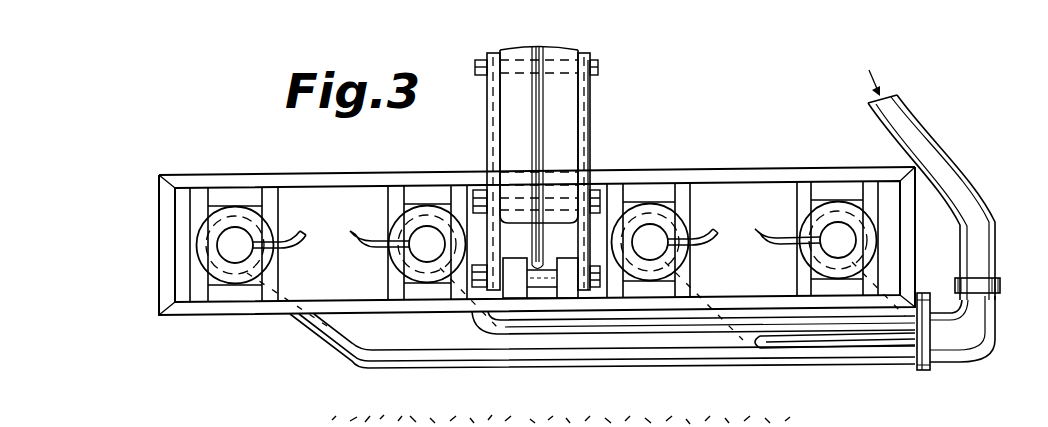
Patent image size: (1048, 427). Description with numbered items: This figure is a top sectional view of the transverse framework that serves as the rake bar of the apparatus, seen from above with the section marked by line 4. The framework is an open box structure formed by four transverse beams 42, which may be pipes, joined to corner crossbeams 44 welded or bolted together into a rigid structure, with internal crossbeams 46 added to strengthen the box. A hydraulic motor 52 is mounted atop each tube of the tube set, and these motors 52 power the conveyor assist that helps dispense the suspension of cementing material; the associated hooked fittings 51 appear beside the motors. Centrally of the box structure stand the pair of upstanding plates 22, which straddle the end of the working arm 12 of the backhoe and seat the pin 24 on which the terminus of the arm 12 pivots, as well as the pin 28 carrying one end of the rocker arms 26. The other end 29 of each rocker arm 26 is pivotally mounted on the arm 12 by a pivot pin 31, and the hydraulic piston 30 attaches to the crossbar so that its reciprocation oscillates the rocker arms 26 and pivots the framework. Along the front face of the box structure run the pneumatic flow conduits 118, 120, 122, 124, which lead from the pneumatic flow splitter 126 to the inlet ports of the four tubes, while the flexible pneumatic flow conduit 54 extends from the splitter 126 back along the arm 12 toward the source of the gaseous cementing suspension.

The section line 4- 4 is at (233, 169).
The working arm 12 is at (567, 118).
The upstanding plates 22 is at (545, 238).
The pin 24 is at (607, 185).
The rocker arms 26 is at (488, 113).
The pin 28 is at (598, 66).
The other end of rocker arm 29 is at (497, 262).
The hydraulic piston 30 is at (540, 146).
The pivot pin 31 is at (600, 293).
The transverse beams 42 is at (337, 175).
The corner crossbeams 44 is at (162, 226).
The internal crossbeams 46 is at (380, 195).
The curved arms 51 is at (328, 236).
The hydraulic motor 52 is at (222, 246).
The flexible pneumatic flow conduit 54 is at (967, 189).
The pneumatic flow conduit 118 is at (312, 336).
The pneumatic flow conduit 120 is at (538, 334).
The pneumatic flow conduit 122 is at (755, 342).
The pneumatic flow conduit 124 is at (887, 307).
The pneumatic flow splitter 126 is at (957, 363).